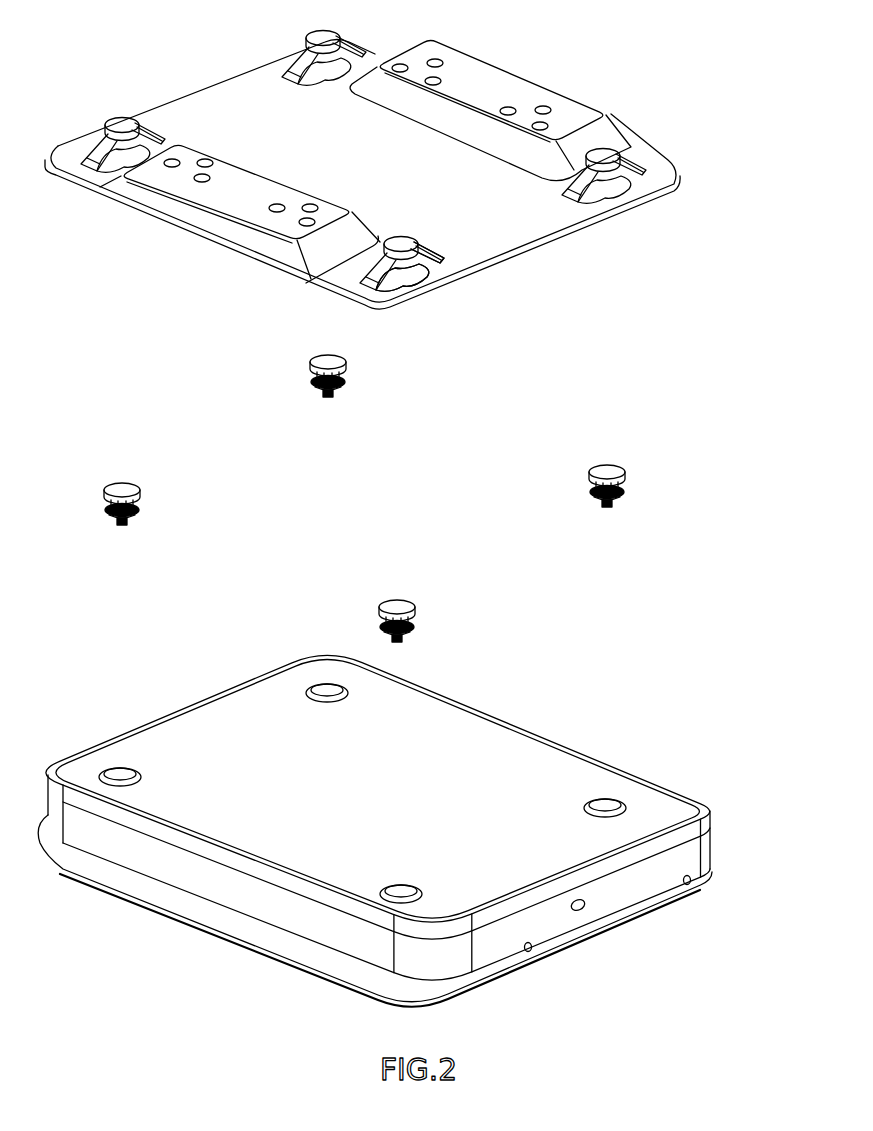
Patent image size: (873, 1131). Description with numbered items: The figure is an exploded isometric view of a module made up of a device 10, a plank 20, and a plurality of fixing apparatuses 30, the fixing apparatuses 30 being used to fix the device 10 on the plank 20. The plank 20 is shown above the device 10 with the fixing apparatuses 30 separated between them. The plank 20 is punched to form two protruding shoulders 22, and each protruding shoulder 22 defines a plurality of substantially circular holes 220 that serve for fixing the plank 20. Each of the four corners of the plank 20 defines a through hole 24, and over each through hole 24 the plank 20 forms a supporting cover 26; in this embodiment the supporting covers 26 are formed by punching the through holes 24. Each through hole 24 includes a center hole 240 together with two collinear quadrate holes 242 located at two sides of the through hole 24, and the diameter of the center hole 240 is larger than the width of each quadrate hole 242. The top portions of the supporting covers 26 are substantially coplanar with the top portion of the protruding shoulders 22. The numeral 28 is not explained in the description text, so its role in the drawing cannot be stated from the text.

The device 10 is at (572, 758).
The plank 20 is at (421, 200).
The protruding shoulder 22 is at (536, 92).
The substantially circular hole 220 is at (437, 60).
The through hole 24 is at (403, 214).
The center hole 240 is at (413, 268).
The quadrate hole 242 is at (424, 258).
The supporting cover 26 is at (618, 157).
The frame plate 28 is at (603, 197).
The fixing apparatus 30 is at (608, 468).